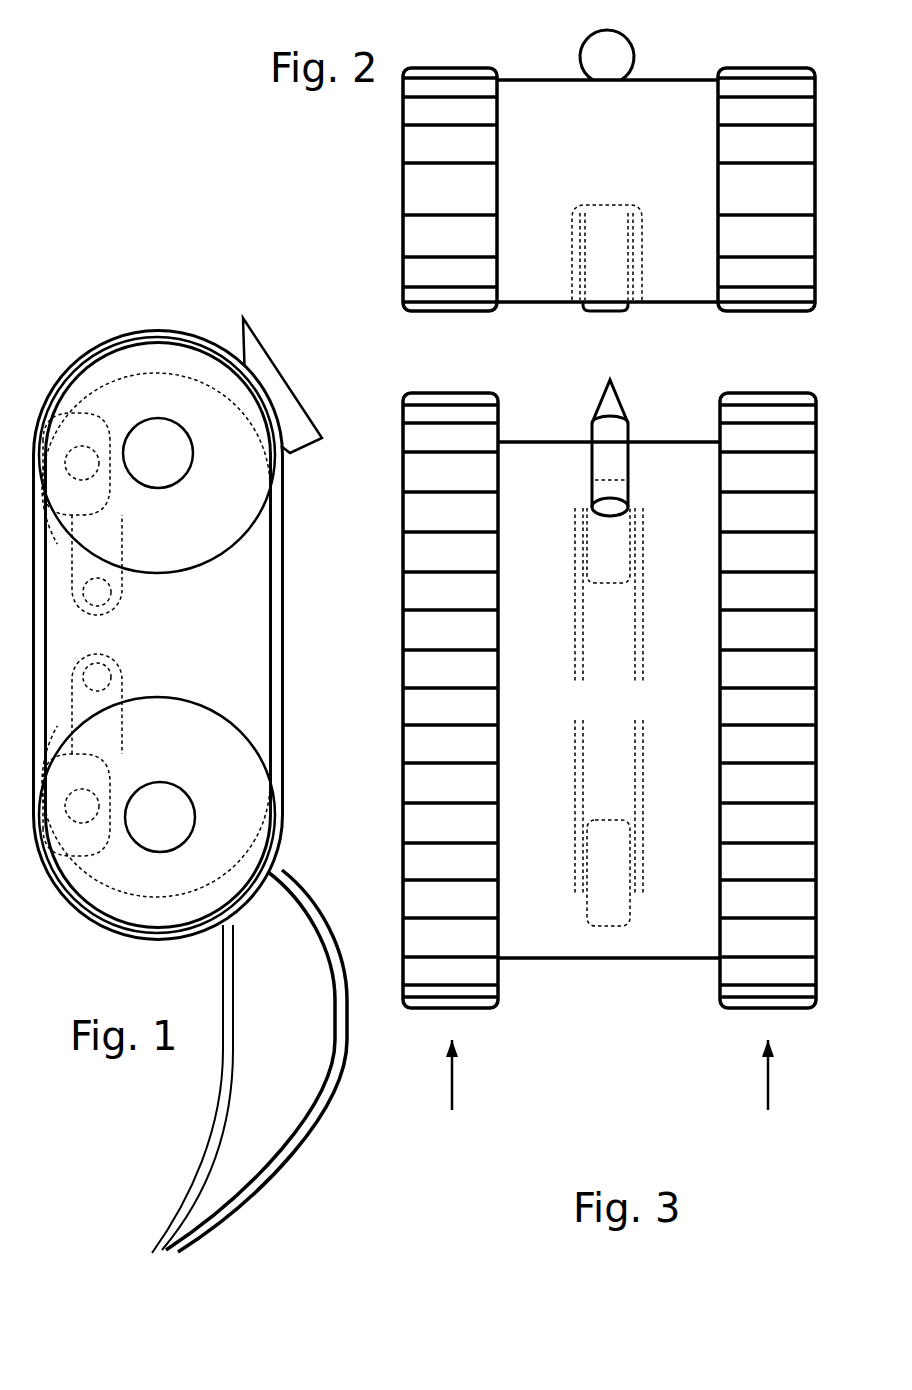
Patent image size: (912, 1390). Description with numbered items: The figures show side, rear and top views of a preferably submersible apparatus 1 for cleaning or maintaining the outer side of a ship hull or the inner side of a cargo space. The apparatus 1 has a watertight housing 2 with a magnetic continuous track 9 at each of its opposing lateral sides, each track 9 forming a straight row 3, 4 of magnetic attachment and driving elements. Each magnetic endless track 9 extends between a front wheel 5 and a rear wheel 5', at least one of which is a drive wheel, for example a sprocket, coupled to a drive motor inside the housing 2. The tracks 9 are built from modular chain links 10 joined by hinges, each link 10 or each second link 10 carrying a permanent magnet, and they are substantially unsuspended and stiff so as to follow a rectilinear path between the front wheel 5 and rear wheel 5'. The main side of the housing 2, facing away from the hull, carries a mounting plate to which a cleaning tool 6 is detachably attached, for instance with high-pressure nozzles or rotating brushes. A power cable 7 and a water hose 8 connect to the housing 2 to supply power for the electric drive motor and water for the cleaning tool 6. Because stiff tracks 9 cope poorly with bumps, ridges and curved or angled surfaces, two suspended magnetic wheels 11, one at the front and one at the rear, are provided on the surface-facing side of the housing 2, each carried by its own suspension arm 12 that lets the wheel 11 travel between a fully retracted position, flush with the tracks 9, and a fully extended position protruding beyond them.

In FIG. 1, the apparatus 1 is at (175, 715).
In FIG. 2, the apparatus 1 is at (541, 185).
In FIG. 3, the apparatus 1 is at (579, 747).
In FIG. 1, the watertight housing 2 is at (218, 648).
In FIG. 2, the watertight housing 2 is at (575, 107).
In FIG. 3, the watertight housing 2 is at (670, 935).
In FIG. 3, the row of magnetic attachment and driving elements 3 is at (450, 1093).
In FIG. 3, the row of magnetic attachment and driving elements 4 is at (766, 1093).
In FIG. 1, the front wheel 5 is at (179, 455).
In FIG. 1, the rear wheel 5' is at (183, 815).
In FIG. 1, the cleaning tool 6 is at (283, 370).
In FIG. 2, the cleaning tool 6 is at (607, 52).
In FIG. 3, the cleaning tool 6 is at (613, 438).
In FIG. 1, the power cable 7 is at (188, 1160).
In FIG. 1, the water hose 8 is at (297, 1172).
In FIG. 1, the magnetic continuous track 9 is at (286, 578).
In FIG. 2, the magnetic continuous track 9 is at (575, 158).
In FIG. 3, the magnetic continuous track 9 is at (579, 669).
In FIG. 2, the chain link 10 is at (408, 183).
In FIG. 3, the chain link 10 is at (413, 628).
In FIG. 1, the suspended magnetic wheel 11 is at (62, 440).
In FIG. 2, the suspended magnetic wheel 11 is at (604, 312).
In FIG. 3, the suspended magnetic wheel 11 is at (590, 500).
In FIG. 1, the suspension arm 12 is at (72, 560).
In FIG. 2, the suspension arm 12 is at (573, 256).
In FIG. 3, the suspension arm 12 is at (577, 580).